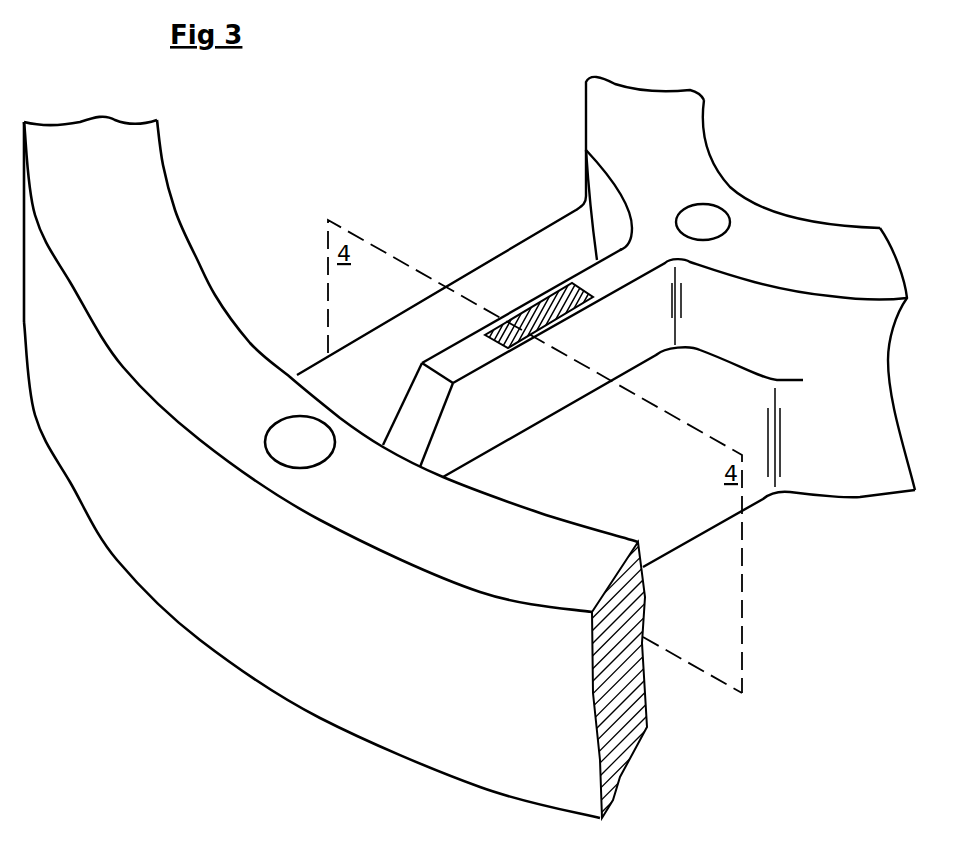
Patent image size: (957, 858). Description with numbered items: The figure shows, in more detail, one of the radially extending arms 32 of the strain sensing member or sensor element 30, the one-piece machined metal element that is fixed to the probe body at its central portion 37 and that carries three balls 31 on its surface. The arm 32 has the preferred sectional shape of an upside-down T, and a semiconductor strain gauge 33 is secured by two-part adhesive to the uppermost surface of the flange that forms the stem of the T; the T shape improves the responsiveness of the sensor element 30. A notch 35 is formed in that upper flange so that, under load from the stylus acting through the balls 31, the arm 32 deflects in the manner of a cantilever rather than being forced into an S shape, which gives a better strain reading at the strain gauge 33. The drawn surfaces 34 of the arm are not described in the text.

The sensor element 30 is at (593, 417).
The ball 31 is at (300, 452).
The radially extending arm 32 is at (593, 322).
The strain gauge 33 is at (522, 303).
The side surface 34 is at (478, 283).
The notch 35 is at (410, 418).
The central portion 37 is at (747, 228).